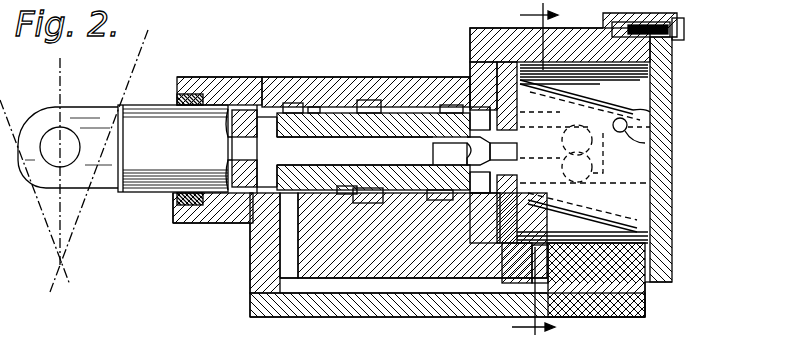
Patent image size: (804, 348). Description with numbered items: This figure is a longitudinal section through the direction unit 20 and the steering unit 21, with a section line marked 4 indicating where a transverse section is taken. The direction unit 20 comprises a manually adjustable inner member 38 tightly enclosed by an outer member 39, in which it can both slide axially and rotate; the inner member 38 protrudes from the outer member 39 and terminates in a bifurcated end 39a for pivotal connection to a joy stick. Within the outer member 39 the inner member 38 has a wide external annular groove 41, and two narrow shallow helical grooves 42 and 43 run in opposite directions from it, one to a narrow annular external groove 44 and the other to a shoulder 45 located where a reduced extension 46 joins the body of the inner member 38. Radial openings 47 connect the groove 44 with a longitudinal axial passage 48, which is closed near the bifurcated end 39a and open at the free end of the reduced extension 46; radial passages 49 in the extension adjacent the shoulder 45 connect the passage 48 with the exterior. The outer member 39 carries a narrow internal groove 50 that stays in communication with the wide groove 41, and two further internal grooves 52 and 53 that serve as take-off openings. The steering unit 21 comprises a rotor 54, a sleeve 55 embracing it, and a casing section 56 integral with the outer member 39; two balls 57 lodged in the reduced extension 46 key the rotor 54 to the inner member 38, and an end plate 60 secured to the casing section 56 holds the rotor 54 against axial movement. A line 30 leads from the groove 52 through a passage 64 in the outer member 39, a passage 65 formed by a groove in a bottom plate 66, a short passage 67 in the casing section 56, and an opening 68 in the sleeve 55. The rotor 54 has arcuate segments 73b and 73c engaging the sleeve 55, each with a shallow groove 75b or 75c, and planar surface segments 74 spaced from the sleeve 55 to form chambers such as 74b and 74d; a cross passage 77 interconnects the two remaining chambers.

The direction unit 20 is at (363, 62).
The steering unit 21 is at (510, 28).
The line 30 is at (283, 294).
The inner member 38 is at (148, 190).
The outer member 39 is at (258, 77).
The bifurcated end 39a is at (82, 115).
The wide external annular groove 41 is at (392, 107).
The helical groove 42 is at (322, 107).
The helical groove 43 is at (417, 105).
The narrow annular external peripheral groove 44 is at (253, 105).
The shoulder 45 is at (468, 107).
The reduced extension 46 is at (478, 205).
The radial openings 47 is at (268, 159).
The longitudinal axial passage 48 is at (350, 167).
The radial passages 49 is at (470, 155).
The narrow annular internal peripheral groove 50 is at (376, 100).
The narrow annular internal peripheral groove 52 is at (294, 103).
The narrow annular internal peripheral groove 53 is at (445, 105).
The rotor 54 is at (640, 190).
The sleeve 55 is at (670, 282).
The casing section 56 is at (570, 36).
The balls 57 is at (567, 152).
The end plate 60 is at (666, 78).
The passage 64 is at (265, 247).
The passage 65 is at (355, 291).
The bottom plate 66 is at (462, 310).
The short passage 67 is at (545, 262).
The opening 68 is at (565, 250).
The arcuate segment 73b is at (640, 218).
The arcuate segment 73c is at (645, 97).
The planar surface segments 74 is at (640, 173).
The chamber 74b is at (620, 240).
The chamber 74d is at (654, 64).
The shallow groove 75b is at (645, 237).
The shallow groove 75c is at (630, 108).
The cross passage 77 is at (645, 143).
The section line 4 is at (535, 174).